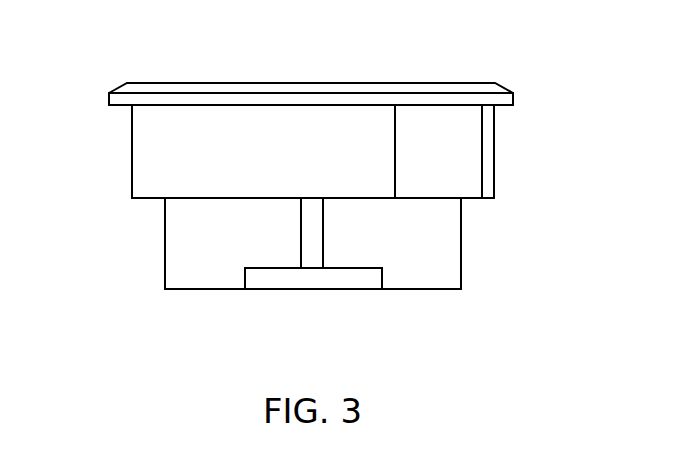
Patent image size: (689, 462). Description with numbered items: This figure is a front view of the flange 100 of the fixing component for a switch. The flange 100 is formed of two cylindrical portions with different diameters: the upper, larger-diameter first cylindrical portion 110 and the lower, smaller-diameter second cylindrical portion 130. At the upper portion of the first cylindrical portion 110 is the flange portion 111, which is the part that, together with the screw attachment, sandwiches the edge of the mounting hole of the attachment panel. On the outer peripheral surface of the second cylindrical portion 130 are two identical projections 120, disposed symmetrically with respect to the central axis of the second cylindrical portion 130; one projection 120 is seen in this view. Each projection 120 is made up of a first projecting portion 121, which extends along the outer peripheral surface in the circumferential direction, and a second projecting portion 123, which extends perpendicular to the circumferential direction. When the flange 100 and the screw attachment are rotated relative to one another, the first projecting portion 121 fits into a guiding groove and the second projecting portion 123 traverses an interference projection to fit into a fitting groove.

The flange 100 is at (477, 42).
The flange portion 111 is at (505, 88).
The first cylindrical portion 110 is at (143, 148).
The second cylindrical portion 130 is at (182, 240).
The projection 120 is at (263, 290).
The first projecting portion 121 is at (347, 282).
The second projecting portion 123 is at (312, 225).